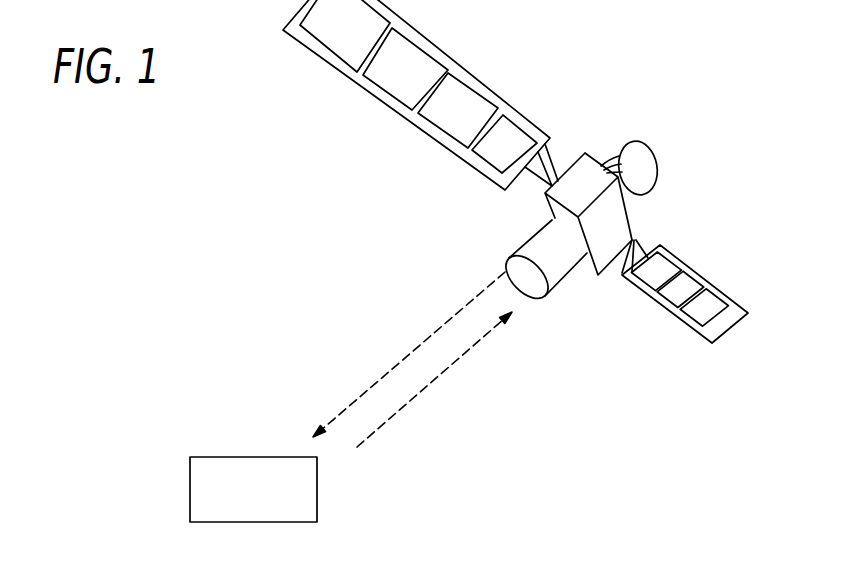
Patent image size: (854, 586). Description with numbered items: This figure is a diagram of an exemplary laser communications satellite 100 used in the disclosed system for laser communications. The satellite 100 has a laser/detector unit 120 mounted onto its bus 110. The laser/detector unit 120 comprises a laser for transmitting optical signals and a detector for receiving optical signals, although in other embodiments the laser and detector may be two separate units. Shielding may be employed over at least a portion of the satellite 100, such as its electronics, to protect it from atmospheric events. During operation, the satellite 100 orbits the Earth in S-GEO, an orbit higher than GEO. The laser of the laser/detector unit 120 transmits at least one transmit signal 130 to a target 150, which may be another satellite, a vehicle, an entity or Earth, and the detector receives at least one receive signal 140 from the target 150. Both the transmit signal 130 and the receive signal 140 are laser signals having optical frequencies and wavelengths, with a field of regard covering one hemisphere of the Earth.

The laser communications satellite 100 is at (296, 245).
The bus 110 is at (633, 231).
The laser/detector unit 120 is at (557, 265).
The transmit signal 130 is at (418, 347).
The receive signal 140 is at (425, 387).
The target 150 is at (271, 502).